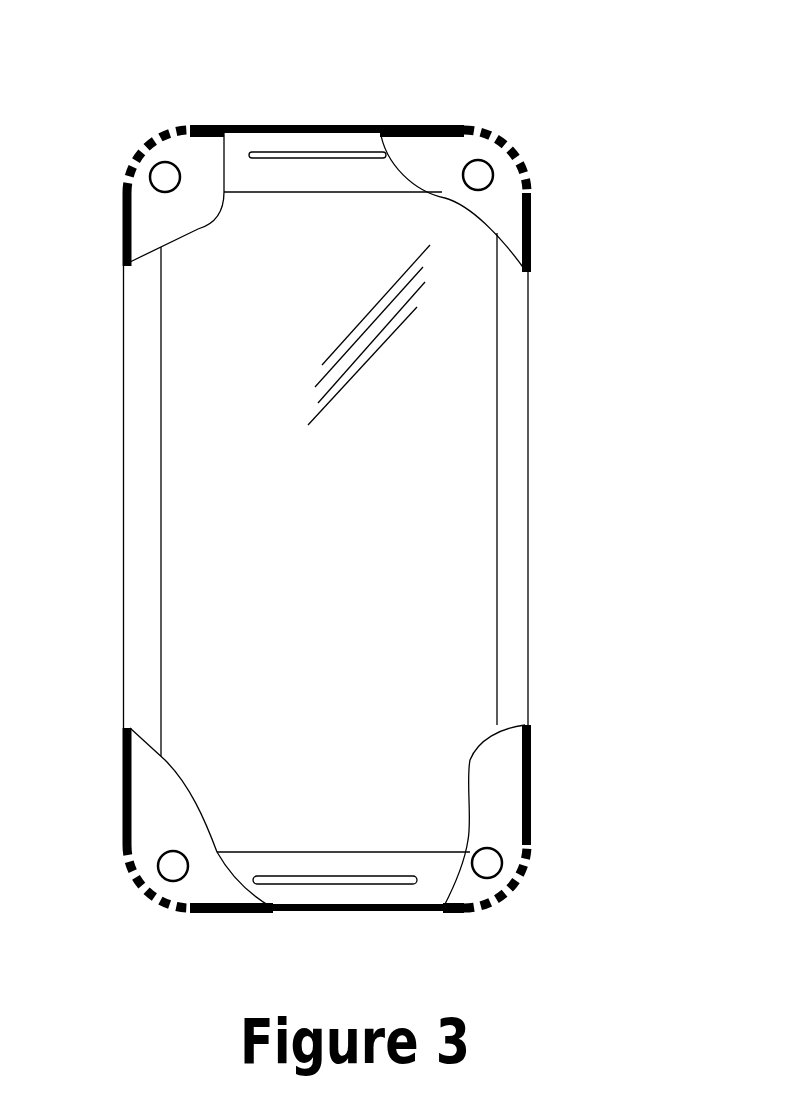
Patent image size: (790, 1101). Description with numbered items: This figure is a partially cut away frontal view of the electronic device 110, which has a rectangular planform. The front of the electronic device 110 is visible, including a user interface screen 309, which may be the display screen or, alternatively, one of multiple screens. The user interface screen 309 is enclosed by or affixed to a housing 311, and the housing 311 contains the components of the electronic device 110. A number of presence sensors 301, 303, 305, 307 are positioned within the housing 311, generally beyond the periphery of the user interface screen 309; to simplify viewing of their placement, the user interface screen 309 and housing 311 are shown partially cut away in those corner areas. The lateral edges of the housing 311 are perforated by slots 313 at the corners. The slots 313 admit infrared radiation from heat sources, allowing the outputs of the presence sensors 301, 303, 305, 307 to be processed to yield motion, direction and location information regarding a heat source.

The electronic device 110 is at (382, 68).
The presence sensor 301 is at (165, 177).
The presence sensor 303 is at (480, 175).
The presence sensor 305 is at (173, 866).
The presence sensor 307 is at (487, 863).
The user interface screen 309 is at (443, 482).
The housing 311 is at (517, 618).
The slots 313 is at (458, 126).